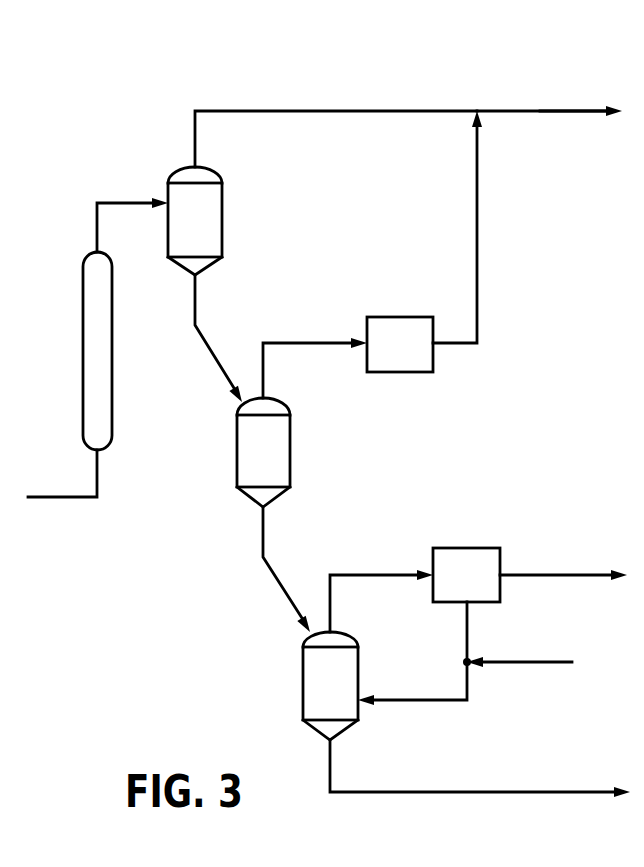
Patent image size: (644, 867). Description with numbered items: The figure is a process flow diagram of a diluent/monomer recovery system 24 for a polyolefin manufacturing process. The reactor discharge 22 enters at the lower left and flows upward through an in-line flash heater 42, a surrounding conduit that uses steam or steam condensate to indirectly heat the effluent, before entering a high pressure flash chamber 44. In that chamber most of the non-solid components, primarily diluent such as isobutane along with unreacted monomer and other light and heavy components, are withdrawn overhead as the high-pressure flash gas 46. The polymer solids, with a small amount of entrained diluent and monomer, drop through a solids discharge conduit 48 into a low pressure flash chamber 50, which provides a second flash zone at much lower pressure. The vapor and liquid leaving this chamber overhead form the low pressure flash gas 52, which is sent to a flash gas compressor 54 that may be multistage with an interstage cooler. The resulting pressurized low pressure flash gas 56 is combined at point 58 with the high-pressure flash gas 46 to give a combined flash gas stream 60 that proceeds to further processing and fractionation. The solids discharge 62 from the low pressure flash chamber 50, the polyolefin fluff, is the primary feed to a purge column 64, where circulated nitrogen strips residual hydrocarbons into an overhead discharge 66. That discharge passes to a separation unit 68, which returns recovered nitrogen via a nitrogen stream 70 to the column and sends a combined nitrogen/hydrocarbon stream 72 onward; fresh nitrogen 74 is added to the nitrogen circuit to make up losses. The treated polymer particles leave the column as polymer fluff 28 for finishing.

The diluent/monomer recovery system 24 is at (146, 158).
The reactor discharge 22 is at (63, 497).
The in-line flash heater 42 is at (83, 335).
The high pressure flash chamber 44 is at (225, 223).
The high-pressure flash gas 46 is at (272, 108).
The solids discharge conduit 48 is at (195, 298).
The low pressure flash chamber 50 is at (293, 450).
The low pressure flash gas 52 is at (310, 333).
The flash gas compressor 54 is at (398, 317).
The pressurized low pressure flash gas 56 is at (477, 248).
The combination point 58 is at (477, 105).
The combined flash gas stream 60 is at (518, 115).
The solids discharge 62 is at (262, 530).
The purge column 64 is at (307, 692).
The overhead discharge 66 is at (378, 570).
The separation unit 68 is at (462, 548).
The nitrogen stream 70 is at (467, 627).
The combined nitrogen/hydrocarbon stream 72 is at (543, 572).
The fresh nitrogen 74 is at (523, 663).
The polymer fluff 28 is at (447, 790).